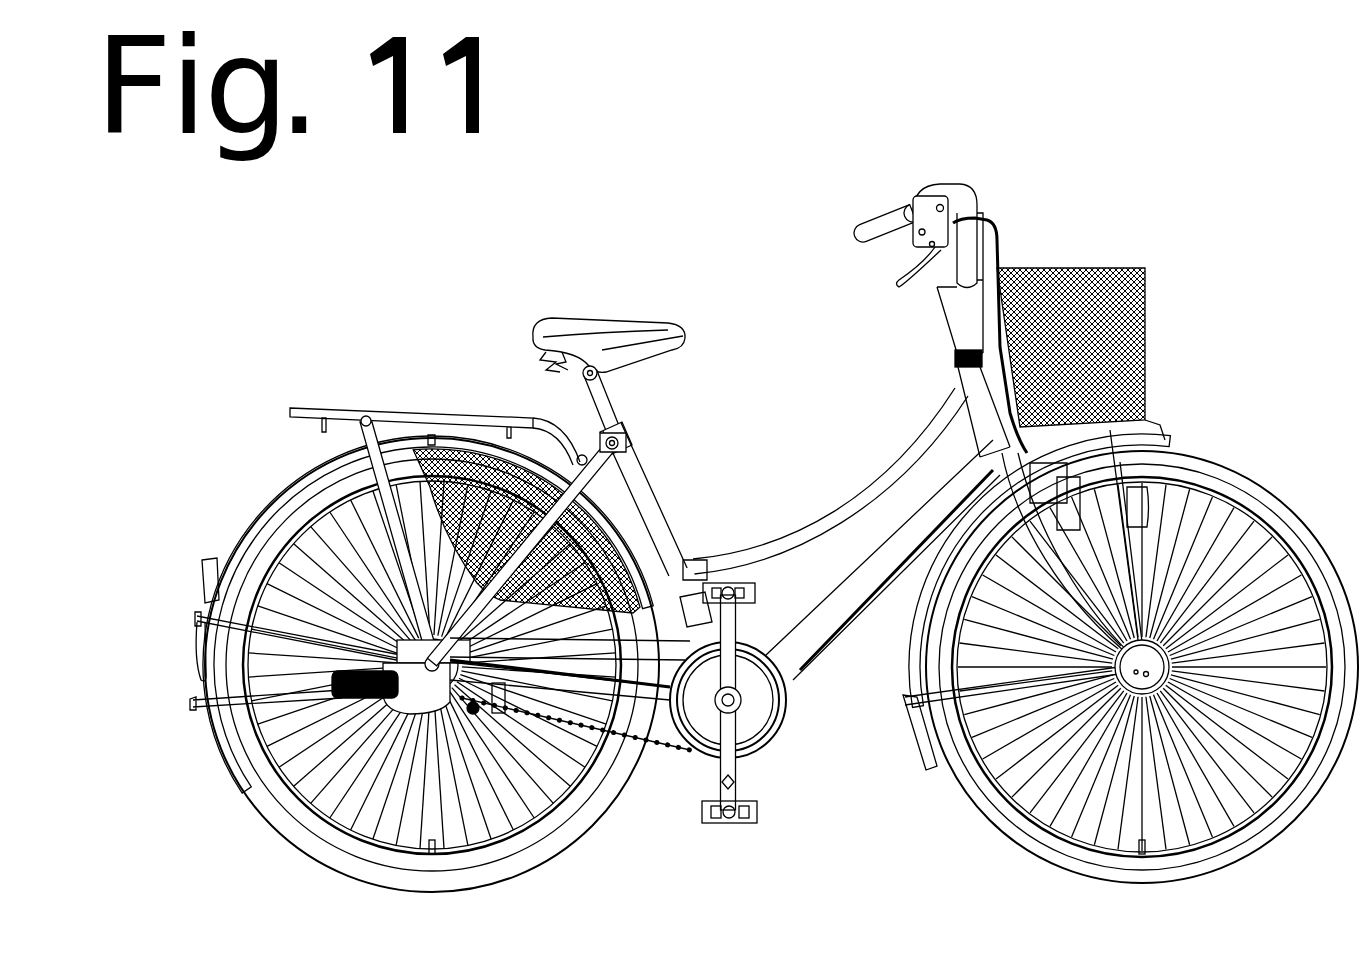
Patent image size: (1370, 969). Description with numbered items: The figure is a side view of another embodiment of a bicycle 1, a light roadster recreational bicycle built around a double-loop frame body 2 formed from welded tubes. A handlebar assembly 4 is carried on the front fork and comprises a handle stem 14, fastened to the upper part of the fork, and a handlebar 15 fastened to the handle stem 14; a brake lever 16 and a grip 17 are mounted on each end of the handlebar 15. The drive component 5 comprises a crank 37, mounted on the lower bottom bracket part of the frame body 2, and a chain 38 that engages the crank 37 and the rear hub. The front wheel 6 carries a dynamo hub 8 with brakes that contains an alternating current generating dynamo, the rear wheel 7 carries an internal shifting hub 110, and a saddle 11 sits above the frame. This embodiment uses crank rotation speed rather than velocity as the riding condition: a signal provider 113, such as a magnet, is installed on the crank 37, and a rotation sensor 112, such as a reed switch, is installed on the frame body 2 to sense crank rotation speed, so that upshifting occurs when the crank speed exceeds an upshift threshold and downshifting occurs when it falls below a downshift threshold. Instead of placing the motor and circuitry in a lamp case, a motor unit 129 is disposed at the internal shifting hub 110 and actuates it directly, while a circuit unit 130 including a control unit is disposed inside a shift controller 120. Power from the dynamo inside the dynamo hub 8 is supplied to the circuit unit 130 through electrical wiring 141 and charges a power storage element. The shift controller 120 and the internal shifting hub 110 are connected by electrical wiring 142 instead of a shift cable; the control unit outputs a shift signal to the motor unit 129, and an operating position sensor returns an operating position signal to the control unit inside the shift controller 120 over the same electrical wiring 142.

The bicycle 1 is at (745, 535).
The frame body 2 is at (838, 505).
The handlebar assembly 4 is at (1002, 232).
The drive component 5 is at (767, 623).
The front wheel 6 is at (1283, 497).
The rear wheel 7 is at (240, 795).
The dynamo hub 8 is at (1162, 445).
The saddle 11 is at (612, 326).
The handle stem 14 is at (938, 313).
The handlebar 15 is at (960, 196).
The brake lever 16 is at (900, 247).
The grip 17 is at (870, 216).
The crank 37 is at (735, 757).
The chain 38 is at (655, 750).
The internal shifting hub 110 is at (310, 578).
The rotation sensor 112 is at (698, 567).
The signal provider 113 is at (707, 770).
The shift controller 120 is at (977, 299).
The circuit unit 130 is at (990, 335).
The motor unit 129 is at (330, 512).
The electrical wiring 141 is at (1133, 440).
The electrical wiring 142 is at (866, 617).